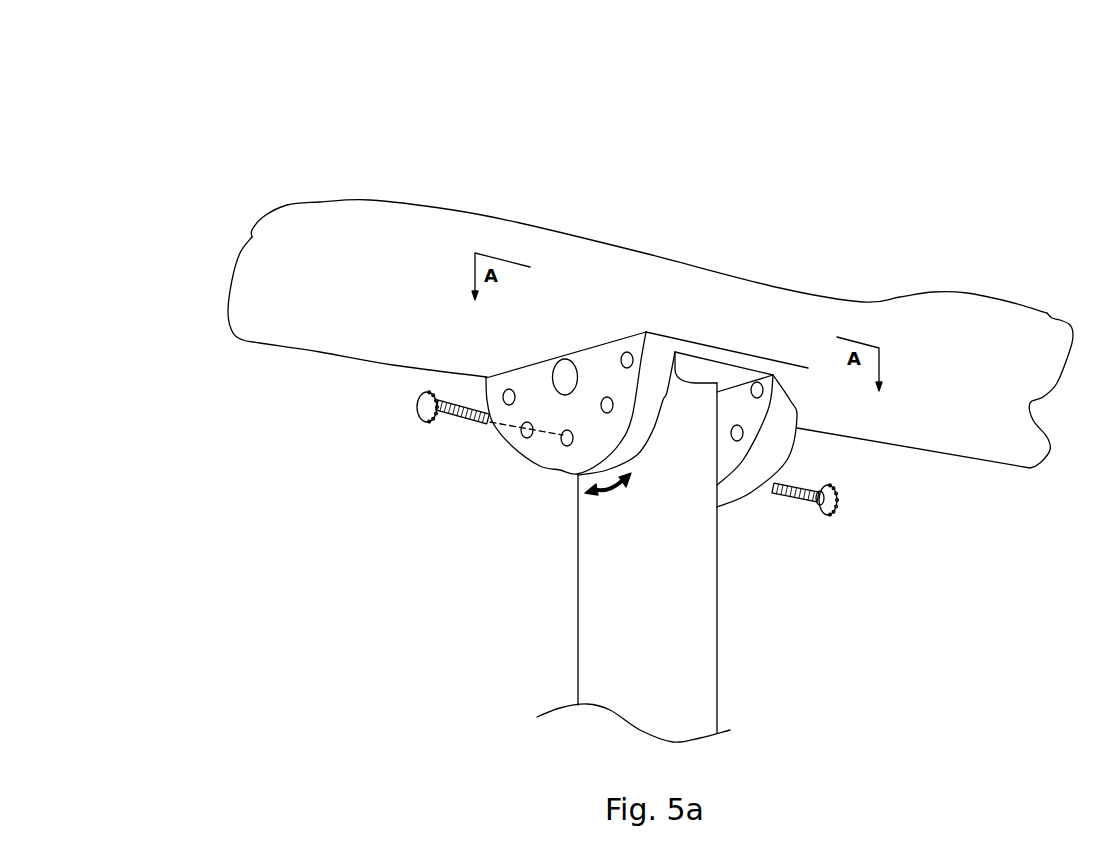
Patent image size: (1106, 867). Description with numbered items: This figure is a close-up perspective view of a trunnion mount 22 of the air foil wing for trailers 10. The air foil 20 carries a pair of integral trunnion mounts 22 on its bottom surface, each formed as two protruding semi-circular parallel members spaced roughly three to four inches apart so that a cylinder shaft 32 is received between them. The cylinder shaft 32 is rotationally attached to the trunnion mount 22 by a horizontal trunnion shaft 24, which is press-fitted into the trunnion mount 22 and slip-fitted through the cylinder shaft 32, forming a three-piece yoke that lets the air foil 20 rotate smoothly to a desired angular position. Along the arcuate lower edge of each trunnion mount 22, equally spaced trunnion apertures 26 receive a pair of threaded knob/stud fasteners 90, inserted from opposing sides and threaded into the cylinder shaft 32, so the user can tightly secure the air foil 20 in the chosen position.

The air foil wing for trailers 10 is at (192, 138).
The air foil 20 is at (338, 212).
The trunnion mount 22 is at (497, 380).
The trunnion shaft 24 is at (560, 364).
The trunnion aperture 26 is at (735, 425).
The cylinder shaft 32 is at (707, 600).
The knob/stud fastener 90 is at (487, 415).